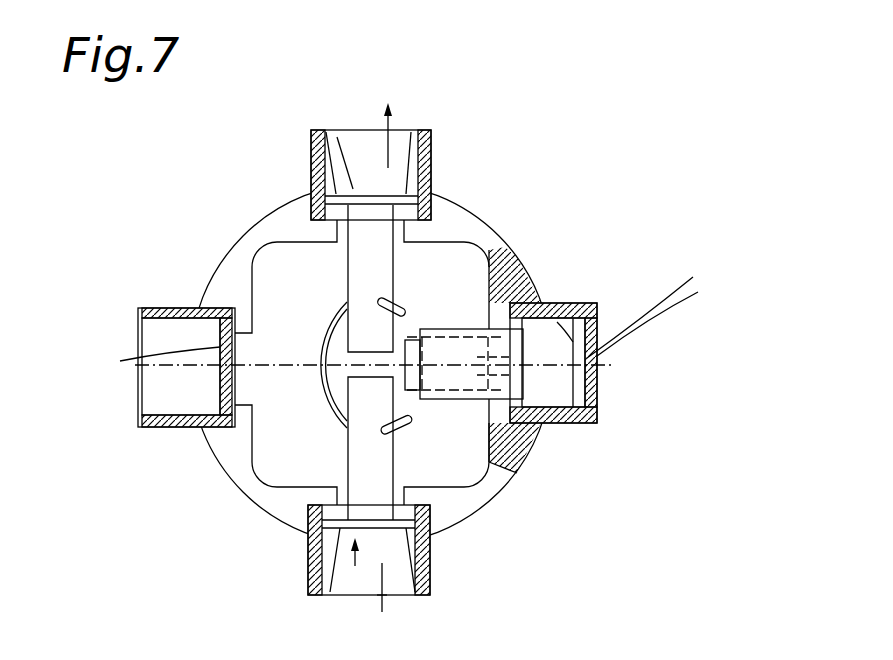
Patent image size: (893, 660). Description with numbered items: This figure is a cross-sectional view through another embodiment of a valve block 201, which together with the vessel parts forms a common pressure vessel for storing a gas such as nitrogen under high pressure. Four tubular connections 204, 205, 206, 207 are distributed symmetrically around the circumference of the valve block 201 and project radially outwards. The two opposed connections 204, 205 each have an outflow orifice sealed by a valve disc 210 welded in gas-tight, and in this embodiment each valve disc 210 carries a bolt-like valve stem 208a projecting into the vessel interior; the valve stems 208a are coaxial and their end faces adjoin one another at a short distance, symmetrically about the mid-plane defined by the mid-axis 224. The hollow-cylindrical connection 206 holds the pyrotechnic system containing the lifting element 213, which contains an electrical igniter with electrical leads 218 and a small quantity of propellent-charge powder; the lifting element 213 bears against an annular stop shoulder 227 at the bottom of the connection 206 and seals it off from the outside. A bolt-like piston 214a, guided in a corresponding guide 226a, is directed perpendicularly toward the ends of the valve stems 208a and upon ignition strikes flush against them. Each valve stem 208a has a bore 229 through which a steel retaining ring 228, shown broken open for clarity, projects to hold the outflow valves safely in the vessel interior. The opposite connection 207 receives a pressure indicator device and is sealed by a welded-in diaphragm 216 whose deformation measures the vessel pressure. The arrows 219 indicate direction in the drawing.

The valve block 201 is at (258, 242).
The tubular connection 204 is at (407, 128).
The tubular connection 205 is at (432, 585).
The hollow-cylindrical connection 206 is at (557, 302).
The connection 207 is at (165, 308).
The bolt-like valve stem 208a is at (336, 127).
The valve disc 210 is at (433, 160).
The lifting element 213 is at (584, 302).
The bolt-like piston 214a is at (600, 388).
The diaphragm 216 is at (120, 361).
The electrical leads 218 is at (693, 283).
The flow direction arrow 219 is at (388, 150).
The mid-axis 224 is at (289, 362).
The guide 226a is at (452, 400).
The annular stop shoulder 227 is at (532, 423).
The steel retaining ring 228 is at (335, 400).
The bore 229 is at (399, 305).